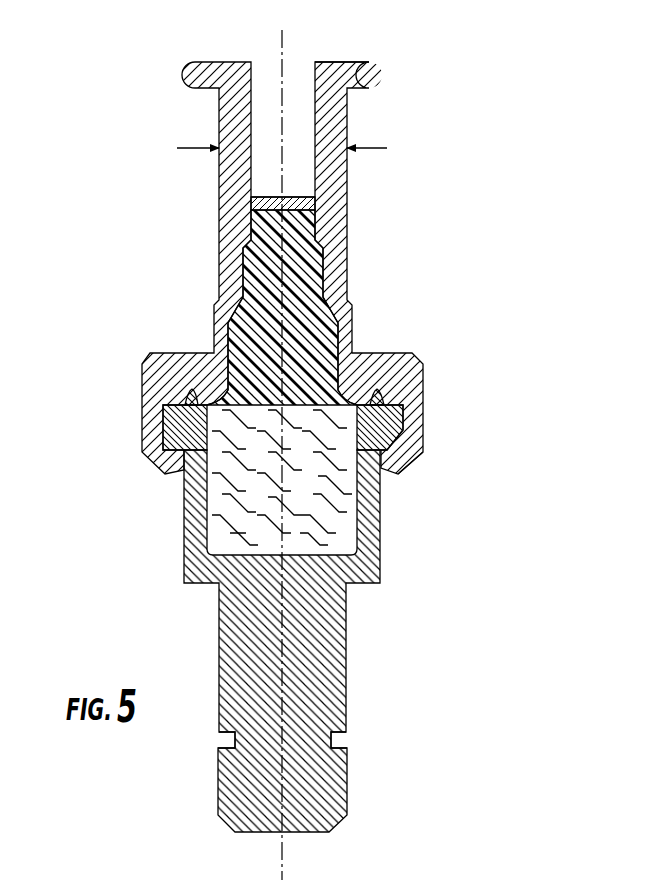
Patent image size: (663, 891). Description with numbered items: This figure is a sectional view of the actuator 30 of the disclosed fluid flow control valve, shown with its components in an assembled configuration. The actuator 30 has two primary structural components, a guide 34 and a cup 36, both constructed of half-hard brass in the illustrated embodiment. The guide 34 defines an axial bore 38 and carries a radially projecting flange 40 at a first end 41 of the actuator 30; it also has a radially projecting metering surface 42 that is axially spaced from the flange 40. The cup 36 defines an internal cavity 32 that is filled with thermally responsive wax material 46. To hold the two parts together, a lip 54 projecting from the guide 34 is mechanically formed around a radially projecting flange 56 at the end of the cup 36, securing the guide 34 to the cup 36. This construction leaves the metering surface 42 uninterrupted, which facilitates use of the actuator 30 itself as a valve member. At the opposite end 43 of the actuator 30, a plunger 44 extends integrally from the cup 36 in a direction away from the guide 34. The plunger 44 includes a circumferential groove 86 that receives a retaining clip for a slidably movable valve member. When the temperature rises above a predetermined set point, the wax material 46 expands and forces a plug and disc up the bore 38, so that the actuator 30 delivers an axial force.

The actuator 30 is at (450, 421).
The internal cavity 32 is at (217, 495).
The guide 34 is at (215, 204).
The cup 36 is at (236, 660).
The axial bore 38 is at (267, 77).
The radially projecting flange 40 is at (382, 77).
The first end 41 is at (328, 62).
The radially projecting metering surface 42 is at (363, 353).
The opposite end 43 is at (302, 833).
The plunger 44 is at (347, 662).
The thermally responsive wax material 46 is at (316, 490).
The lip 54 is at (412, 462).
The radially projecting flange 56 is at (172, 424).
The circumferential groove 86 is at (332, 742).